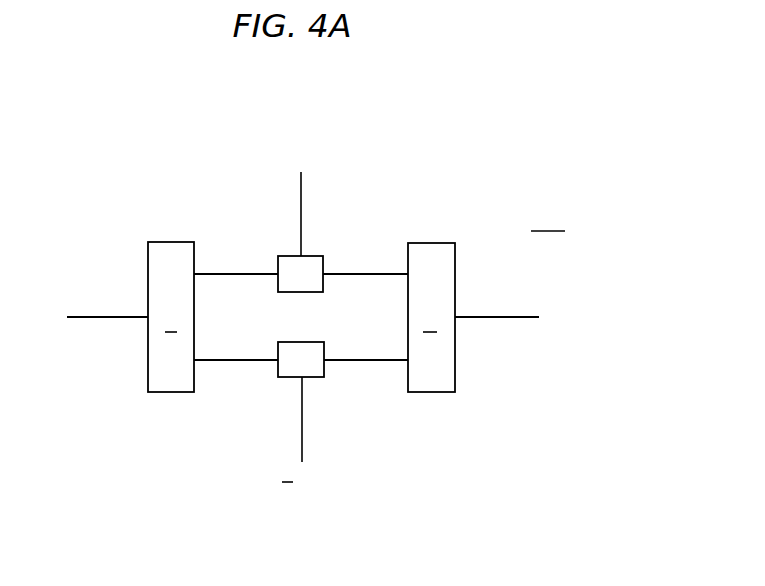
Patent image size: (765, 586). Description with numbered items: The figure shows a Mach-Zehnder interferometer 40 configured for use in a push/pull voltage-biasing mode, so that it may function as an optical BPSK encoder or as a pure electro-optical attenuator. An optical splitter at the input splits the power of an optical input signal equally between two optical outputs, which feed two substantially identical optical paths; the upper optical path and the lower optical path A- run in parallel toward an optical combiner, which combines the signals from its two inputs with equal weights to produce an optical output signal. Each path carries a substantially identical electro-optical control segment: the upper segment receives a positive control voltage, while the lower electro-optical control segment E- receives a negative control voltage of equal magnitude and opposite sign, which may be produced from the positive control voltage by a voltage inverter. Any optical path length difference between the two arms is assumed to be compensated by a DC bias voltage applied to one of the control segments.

The Mach-Zehnder interferometer 40 is at (503, 162).
The optical path A- is at (240, 368).
The electro-optical control segment E- is at (328, 379).